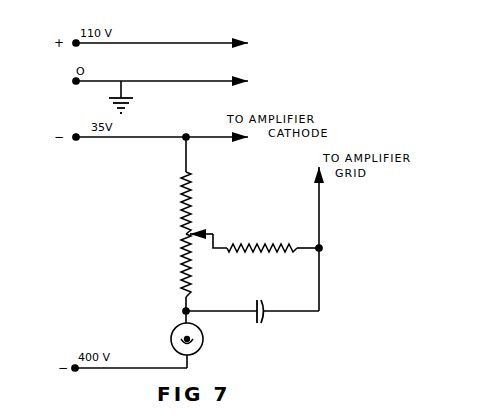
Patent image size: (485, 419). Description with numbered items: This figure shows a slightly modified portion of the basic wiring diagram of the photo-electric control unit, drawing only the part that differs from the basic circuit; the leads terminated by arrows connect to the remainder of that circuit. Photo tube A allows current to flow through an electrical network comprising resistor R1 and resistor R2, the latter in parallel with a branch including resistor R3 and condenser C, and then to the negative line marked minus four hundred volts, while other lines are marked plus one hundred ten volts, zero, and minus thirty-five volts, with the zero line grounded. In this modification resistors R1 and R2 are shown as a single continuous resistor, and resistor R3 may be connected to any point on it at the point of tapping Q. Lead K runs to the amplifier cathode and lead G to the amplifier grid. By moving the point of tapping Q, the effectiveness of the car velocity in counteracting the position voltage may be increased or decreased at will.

The resistor R1 is at (196, 203).
The resistor R2 is at (196, 272).
The resistor R3 is at (273, 239).
The condenser C is at (251, 303).
The cathode lead K is at (197, 147).
The point of tapping Q is at (208, 232).
The grid lead G is at (324, 239).
The photo tube A is at (147, 339).